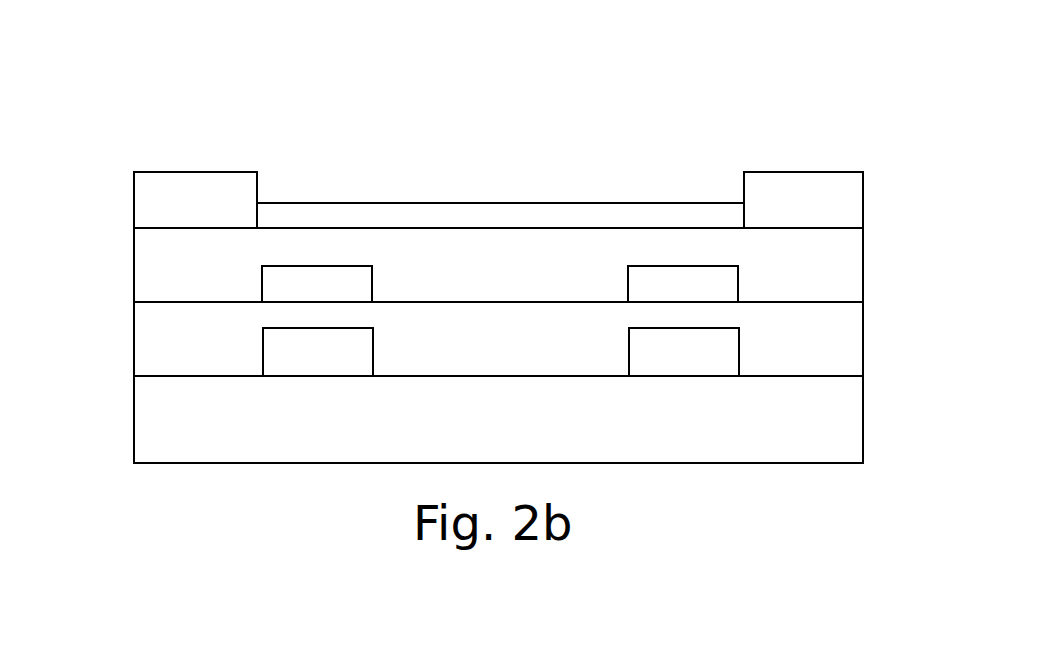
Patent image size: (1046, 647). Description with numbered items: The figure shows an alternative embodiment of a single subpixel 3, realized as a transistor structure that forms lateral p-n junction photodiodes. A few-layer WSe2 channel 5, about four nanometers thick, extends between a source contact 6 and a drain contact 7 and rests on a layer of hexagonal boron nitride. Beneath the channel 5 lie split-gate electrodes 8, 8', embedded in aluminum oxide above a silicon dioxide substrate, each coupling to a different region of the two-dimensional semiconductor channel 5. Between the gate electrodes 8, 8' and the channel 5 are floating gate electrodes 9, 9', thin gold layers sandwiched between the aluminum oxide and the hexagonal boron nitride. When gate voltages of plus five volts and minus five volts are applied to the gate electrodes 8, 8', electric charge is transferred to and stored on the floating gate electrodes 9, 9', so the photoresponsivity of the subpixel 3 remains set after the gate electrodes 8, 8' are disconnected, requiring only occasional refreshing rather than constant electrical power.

The subpixel 3 is at (186, 108).
The channel 5 is at (500, 212).
The source contact 6 is at (133, 193).
The drain contact 7 is at (753, 190).
The gate electrode 8 is at (214, 337).
The gate electrode 8' is at (791, 340).
The floating gate electrode 9 is at (213, 265).
The floating gate electrode 9' is at (790, 265).